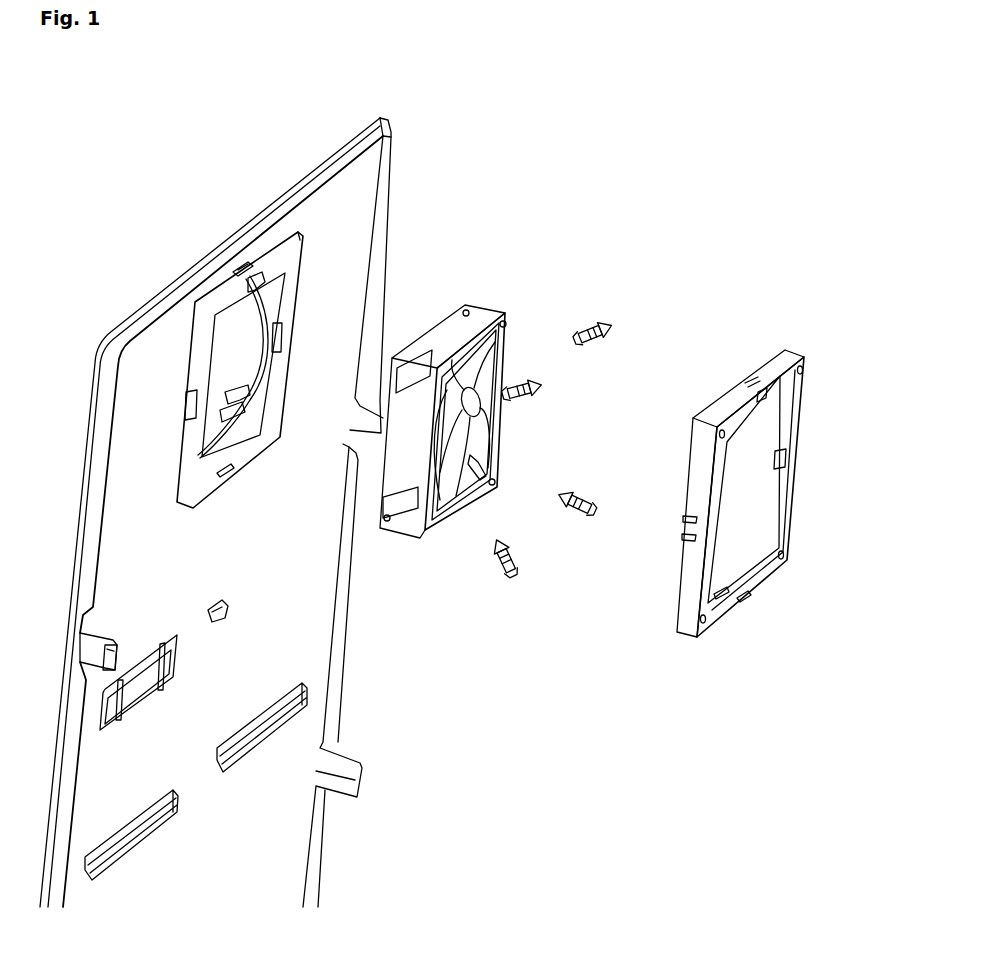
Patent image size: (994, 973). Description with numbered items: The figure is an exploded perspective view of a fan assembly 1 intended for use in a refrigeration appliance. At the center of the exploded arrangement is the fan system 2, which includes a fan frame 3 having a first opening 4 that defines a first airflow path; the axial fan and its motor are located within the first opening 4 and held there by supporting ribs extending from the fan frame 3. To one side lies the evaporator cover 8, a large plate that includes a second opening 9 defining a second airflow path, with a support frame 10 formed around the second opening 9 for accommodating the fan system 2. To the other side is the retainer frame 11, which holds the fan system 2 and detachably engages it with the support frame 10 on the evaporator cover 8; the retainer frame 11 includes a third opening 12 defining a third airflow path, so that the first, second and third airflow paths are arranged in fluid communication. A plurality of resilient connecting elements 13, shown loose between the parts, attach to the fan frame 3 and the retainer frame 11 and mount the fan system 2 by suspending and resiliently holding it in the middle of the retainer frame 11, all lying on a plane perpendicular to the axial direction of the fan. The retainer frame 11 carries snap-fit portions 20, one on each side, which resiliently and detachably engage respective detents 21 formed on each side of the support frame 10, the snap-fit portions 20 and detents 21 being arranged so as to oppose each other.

The fan assembly 1 is at (586, 86).
The fan system 2 is at (493, 256).
The fan frame 3 is at (438, 322).
The first opening 4 is at (492, 415).
The evaporator cover 8 is at (291, 192).
The second opening 9 is at (220, 343).
The support frame 10 is at (252, 447).
The retainer frame 11 is at (786, 352).
The third opening 12 is at (752, 498).
The connecting element 13 is at (597, 308).
The snap-fit portion 20 is at (738, 383).
The detent 21 is at (238, 264).